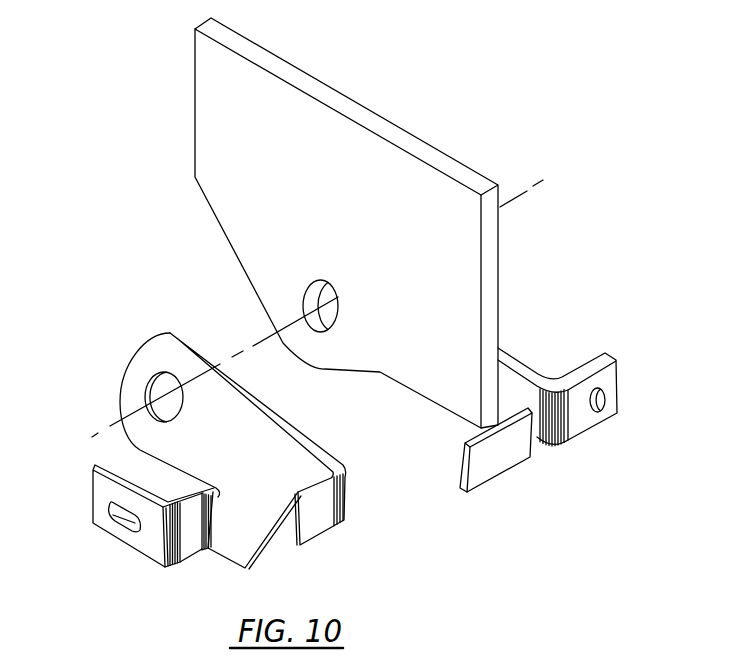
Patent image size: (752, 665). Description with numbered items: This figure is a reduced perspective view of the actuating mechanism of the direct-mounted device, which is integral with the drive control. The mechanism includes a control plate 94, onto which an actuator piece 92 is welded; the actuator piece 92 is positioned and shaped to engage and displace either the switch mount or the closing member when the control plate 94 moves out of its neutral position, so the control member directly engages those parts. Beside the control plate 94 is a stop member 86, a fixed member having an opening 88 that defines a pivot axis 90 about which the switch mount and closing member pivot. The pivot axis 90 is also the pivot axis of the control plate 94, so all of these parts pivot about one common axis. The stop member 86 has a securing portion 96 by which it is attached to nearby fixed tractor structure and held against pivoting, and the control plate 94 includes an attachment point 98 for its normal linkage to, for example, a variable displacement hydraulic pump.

The stop member 86 is at (278, 442).
The opening 88 is at (150, 379).
The pivot axis 90 is at (114, 423).
The actuator piece 92 is at (508, 463).
The control plate 94 is at (233, 215).
The securing portion 96 is at (142, 538).
The attachment point 98 is at (607, 397).